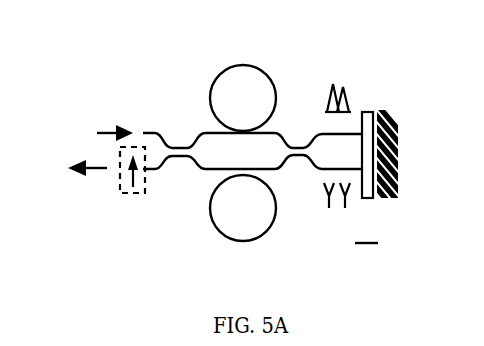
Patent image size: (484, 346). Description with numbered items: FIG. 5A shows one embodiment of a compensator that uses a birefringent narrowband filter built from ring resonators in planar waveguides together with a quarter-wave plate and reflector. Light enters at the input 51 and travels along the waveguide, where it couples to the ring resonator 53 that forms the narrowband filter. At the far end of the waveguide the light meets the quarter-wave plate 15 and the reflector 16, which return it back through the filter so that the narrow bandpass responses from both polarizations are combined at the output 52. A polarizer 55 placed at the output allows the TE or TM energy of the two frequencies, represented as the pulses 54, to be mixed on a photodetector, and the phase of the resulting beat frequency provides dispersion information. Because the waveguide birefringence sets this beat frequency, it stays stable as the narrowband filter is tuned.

The quarter-wave plate 15 is at (370, 102).
The reflector 16 is at (405, 133).
The input 51 is at (87, 128).
The output 52 is at (62, 172).
The ring resonator 53 is at (225, 63).
The pulses 54 is at (342, 75).
The polarizer 55 is at (148, 179).